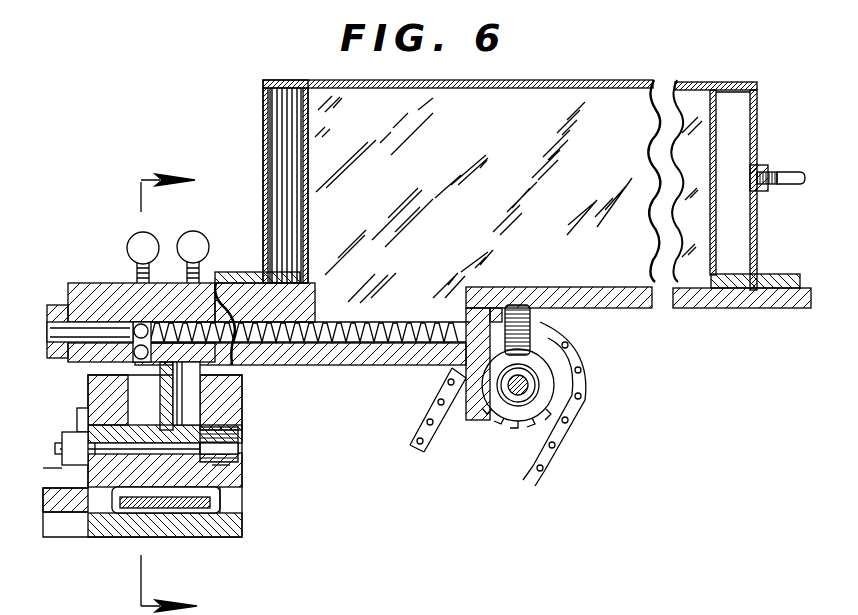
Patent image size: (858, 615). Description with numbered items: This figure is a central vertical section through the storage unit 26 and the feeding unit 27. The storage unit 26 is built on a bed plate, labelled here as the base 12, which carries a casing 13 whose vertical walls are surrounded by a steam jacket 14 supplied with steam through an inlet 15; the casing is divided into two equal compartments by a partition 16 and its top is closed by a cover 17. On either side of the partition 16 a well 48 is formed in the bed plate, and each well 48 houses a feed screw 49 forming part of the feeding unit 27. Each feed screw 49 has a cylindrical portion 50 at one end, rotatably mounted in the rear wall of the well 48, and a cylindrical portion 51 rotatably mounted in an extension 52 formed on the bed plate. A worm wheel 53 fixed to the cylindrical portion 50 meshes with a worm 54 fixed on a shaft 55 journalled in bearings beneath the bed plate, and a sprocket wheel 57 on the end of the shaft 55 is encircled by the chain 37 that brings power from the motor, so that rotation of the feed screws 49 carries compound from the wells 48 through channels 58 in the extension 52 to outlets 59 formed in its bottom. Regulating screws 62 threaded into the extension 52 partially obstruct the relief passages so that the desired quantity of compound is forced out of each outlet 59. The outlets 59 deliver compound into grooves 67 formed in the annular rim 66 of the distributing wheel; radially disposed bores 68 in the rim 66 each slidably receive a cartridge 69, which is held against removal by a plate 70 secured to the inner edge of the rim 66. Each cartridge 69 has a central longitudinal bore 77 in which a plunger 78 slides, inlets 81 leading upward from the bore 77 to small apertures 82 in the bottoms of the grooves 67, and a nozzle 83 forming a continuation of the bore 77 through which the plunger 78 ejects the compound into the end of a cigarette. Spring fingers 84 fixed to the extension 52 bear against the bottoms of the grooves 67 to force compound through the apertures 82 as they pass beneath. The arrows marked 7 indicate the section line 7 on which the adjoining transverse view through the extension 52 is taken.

The section line 7- 7 is at (157, 391).
The base 12 is at (771, 308).
The inner wall 13 is at (713, 262).
The outer wall 14 is at (729, 117).
The pin 15 is at (786, 186).
The left column 16 is at (300, 122).
The top wall 17 is at (346, 80).
The storage unit 26 is at (668, 76).
The feeding unit 27 is at (102, 192).
The chain 37 is at (537, 482).
The well 48 is at (388, 345).
The feed screw 49 is at (393, 305).
The cylindrical portion 50 is at (535, 352).
The cylindrical portion 51 is at (84, 330).
The extension 52 is at (98, 290).
The worm wheel 53 is at (528, 318).
The worm 54 is at (532, 400).
The shaft 55 is at (515, 395).
The sprocket wheel 57 is at (555, 395).
The channel 58 is at (258, 333).
The outlet 59 is at (241, 403).
The regulating screw 62 is at (186, 236).
The annular rim 66 is at (225, 393).
The groove 67 is at (140, 383).
The bore 68 is at (214, 470).
The cartridge 69 is at (228, 498).
The plate 70 is at (64, 475).
The central longitudinal bore 77 is at (179, 537).
The plunger 78 is at (121, 450).
The inlet 81 is at (230, 465).
The aperture 82 is at (80, 412).
The nozzle 83 is at (207, 460).
The spring finger 84 is at (178, 330).